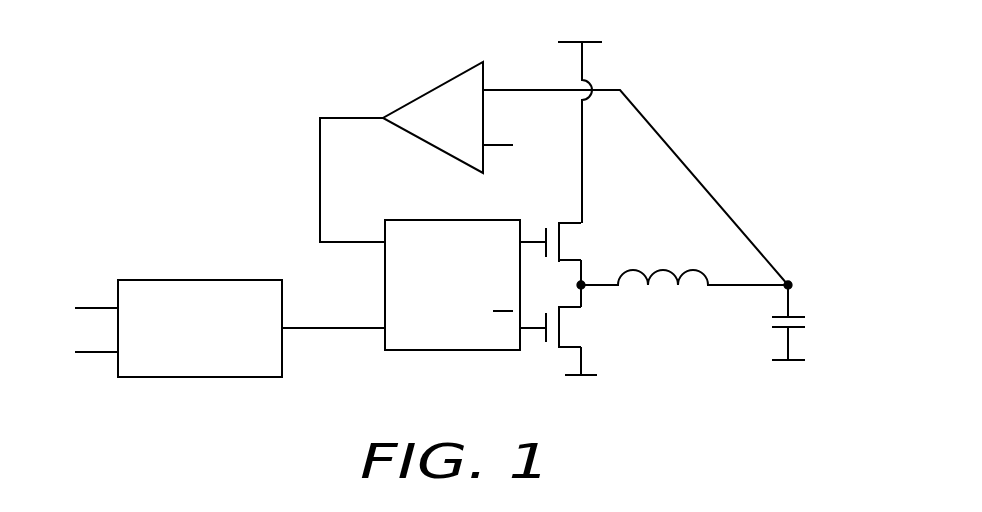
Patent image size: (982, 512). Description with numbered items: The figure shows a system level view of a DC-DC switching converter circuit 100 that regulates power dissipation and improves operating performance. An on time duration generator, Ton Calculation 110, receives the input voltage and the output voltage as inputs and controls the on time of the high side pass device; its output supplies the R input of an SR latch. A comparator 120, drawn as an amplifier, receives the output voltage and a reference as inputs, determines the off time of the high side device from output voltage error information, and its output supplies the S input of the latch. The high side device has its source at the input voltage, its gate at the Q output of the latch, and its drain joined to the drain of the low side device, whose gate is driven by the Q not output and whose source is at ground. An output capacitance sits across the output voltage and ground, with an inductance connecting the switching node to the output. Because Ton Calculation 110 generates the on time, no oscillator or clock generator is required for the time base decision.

The DC-DC switching converter circuit 100 is at (199, 47).
The Ton Calculation 110 is at (247, 280).
The comparator 120 is at (430, 91).